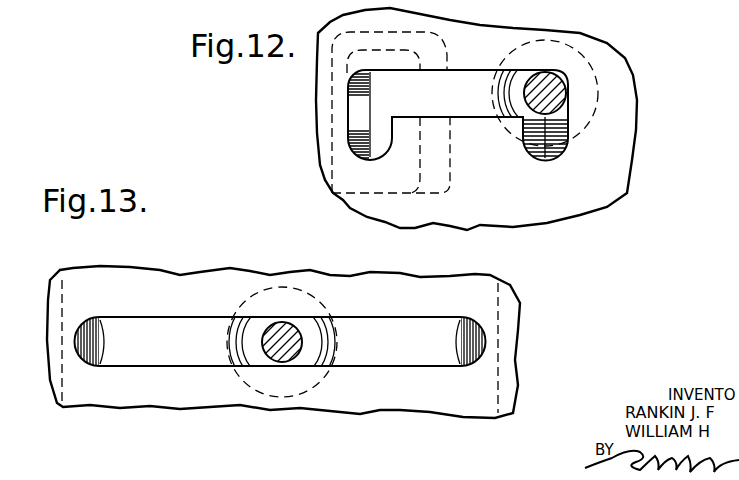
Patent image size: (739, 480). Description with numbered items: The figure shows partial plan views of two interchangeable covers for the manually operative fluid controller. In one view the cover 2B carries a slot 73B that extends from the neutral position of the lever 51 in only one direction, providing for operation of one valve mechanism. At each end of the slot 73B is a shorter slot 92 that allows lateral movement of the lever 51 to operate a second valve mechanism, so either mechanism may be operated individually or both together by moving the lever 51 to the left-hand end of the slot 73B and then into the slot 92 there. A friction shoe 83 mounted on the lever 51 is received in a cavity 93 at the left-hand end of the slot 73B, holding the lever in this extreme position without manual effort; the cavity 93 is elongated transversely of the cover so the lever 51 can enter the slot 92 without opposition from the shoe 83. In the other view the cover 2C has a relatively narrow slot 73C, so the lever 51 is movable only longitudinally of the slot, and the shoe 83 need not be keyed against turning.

In FIG. 12, the cover 2B is at (637, 108).
In FIG. 13, the cover 2C is at (50, 395).
In FIG. 12, the slot 73B is at (481, 85).
In FIG. 13, the slot 73C is at (198, 350).
In FIG. 12, the lever 51 is at (558, 73).
In FIG. 13, the lever 51 is at (282, 357).
In FIG. 12, the friction shoe 83 is at (492, 117).
In FIG. 13, the friction shoe 83 is at (250, 353).
In FIG. 12, the shorter slot 92 is at (378, 134).
In FIG. 12, the cavity 93 is at (332, 85).